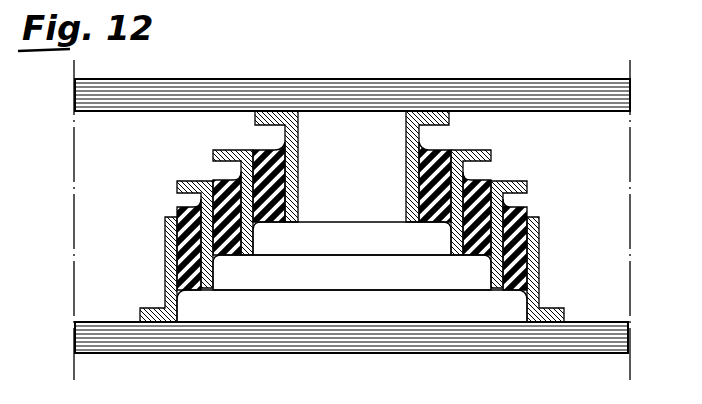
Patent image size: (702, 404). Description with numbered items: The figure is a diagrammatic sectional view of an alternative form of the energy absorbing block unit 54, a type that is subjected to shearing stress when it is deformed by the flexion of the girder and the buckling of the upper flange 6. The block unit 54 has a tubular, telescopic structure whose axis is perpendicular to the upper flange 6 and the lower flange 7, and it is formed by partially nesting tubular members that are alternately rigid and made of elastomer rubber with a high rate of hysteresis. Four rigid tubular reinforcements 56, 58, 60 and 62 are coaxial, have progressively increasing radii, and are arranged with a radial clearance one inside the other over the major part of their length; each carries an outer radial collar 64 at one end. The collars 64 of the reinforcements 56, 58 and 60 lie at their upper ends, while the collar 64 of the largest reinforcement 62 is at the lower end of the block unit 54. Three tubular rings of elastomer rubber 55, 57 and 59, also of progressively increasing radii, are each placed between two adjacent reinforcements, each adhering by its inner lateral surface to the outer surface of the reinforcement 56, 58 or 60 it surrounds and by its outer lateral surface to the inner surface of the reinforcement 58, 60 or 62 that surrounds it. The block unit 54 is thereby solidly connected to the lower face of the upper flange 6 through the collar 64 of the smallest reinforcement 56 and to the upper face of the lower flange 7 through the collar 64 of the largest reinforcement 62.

The upper flange 6 is at (537, 100).
The lower flange 7 is at (576, 337).
The energy absorbing block unit 54 is at (163, 183).
The ring of elastomer rubber 55 is at (268, 224).
The rigid tubular reinforcement 56 is at (421, 127).
The ring of elastomer rubber 57 is at (225, 260).
The rigid tubular reinforcement 58 is at (463, 168).
The ring of elastomer rubber 59 is at (193, 293).
The rigid tubular reinforcement 60 is at (503, 206).
The rigid tubular reinforcement 62 is at (536, 260).
The outer radial collar 64 is at (254, 117).